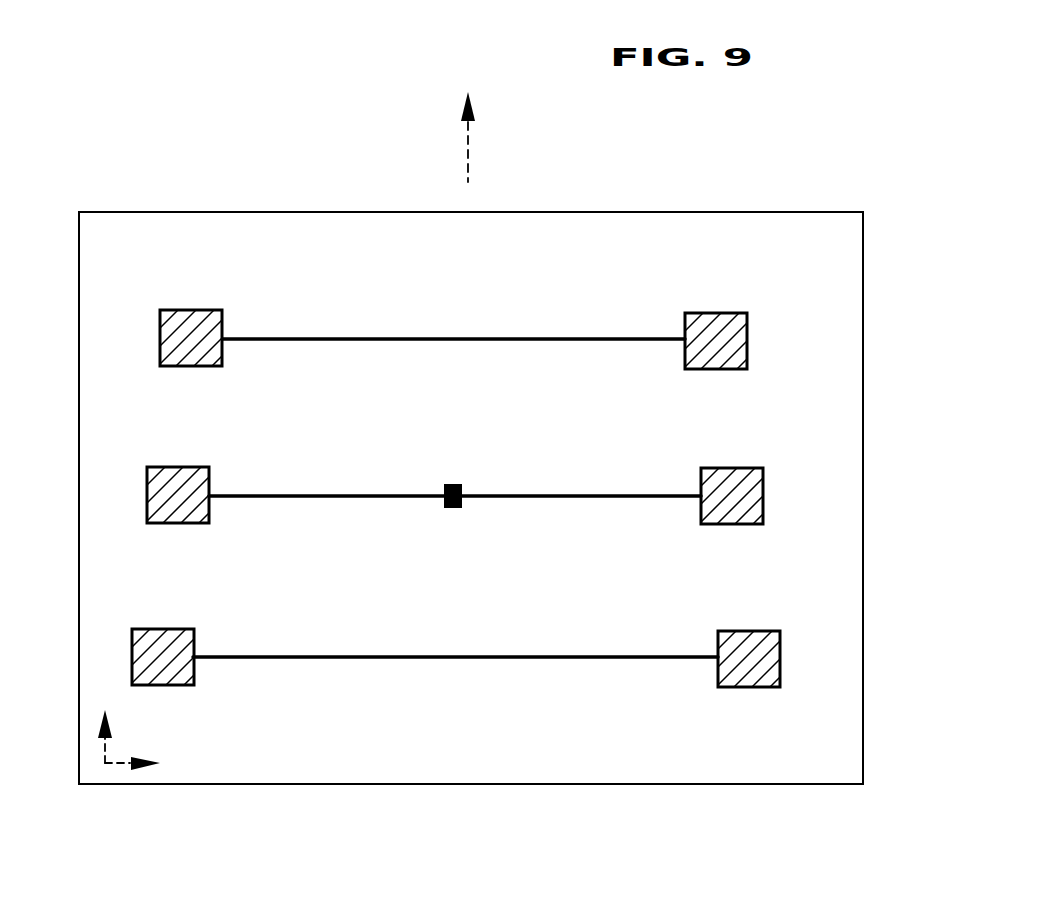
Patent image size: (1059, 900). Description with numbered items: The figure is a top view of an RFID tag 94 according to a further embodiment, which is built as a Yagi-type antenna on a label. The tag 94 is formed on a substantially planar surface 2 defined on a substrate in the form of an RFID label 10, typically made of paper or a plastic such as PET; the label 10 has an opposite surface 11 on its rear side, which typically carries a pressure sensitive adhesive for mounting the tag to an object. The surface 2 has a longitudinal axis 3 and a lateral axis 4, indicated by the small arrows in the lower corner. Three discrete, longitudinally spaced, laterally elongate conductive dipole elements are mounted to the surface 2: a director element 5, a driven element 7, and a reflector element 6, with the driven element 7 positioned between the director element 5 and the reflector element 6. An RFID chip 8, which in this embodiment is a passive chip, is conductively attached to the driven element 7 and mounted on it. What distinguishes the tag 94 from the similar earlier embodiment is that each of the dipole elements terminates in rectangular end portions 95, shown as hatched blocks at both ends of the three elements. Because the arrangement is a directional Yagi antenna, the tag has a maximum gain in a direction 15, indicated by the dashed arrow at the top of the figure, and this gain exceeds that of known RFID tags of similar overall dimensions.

The surface 2 is at (198, 218).
The longitudinal axis 3 is at (100, 750).
The lateral axis 4 is at (118, 766).
The director element 5 is at (493, 337).
The reflector element 6 is at (513, 655).
The driven element 7 is at (550, 492).
The RFID chip 8 is at (452, 508).
The RFID label 10 is at (623, 237).
The opposite surface 11 is at (503, 796).
The direction of maximum gain 15 is at (468, 152).
The tag 94 is at (321, 158).
The rectangular end portions 95 is at (195, 318).